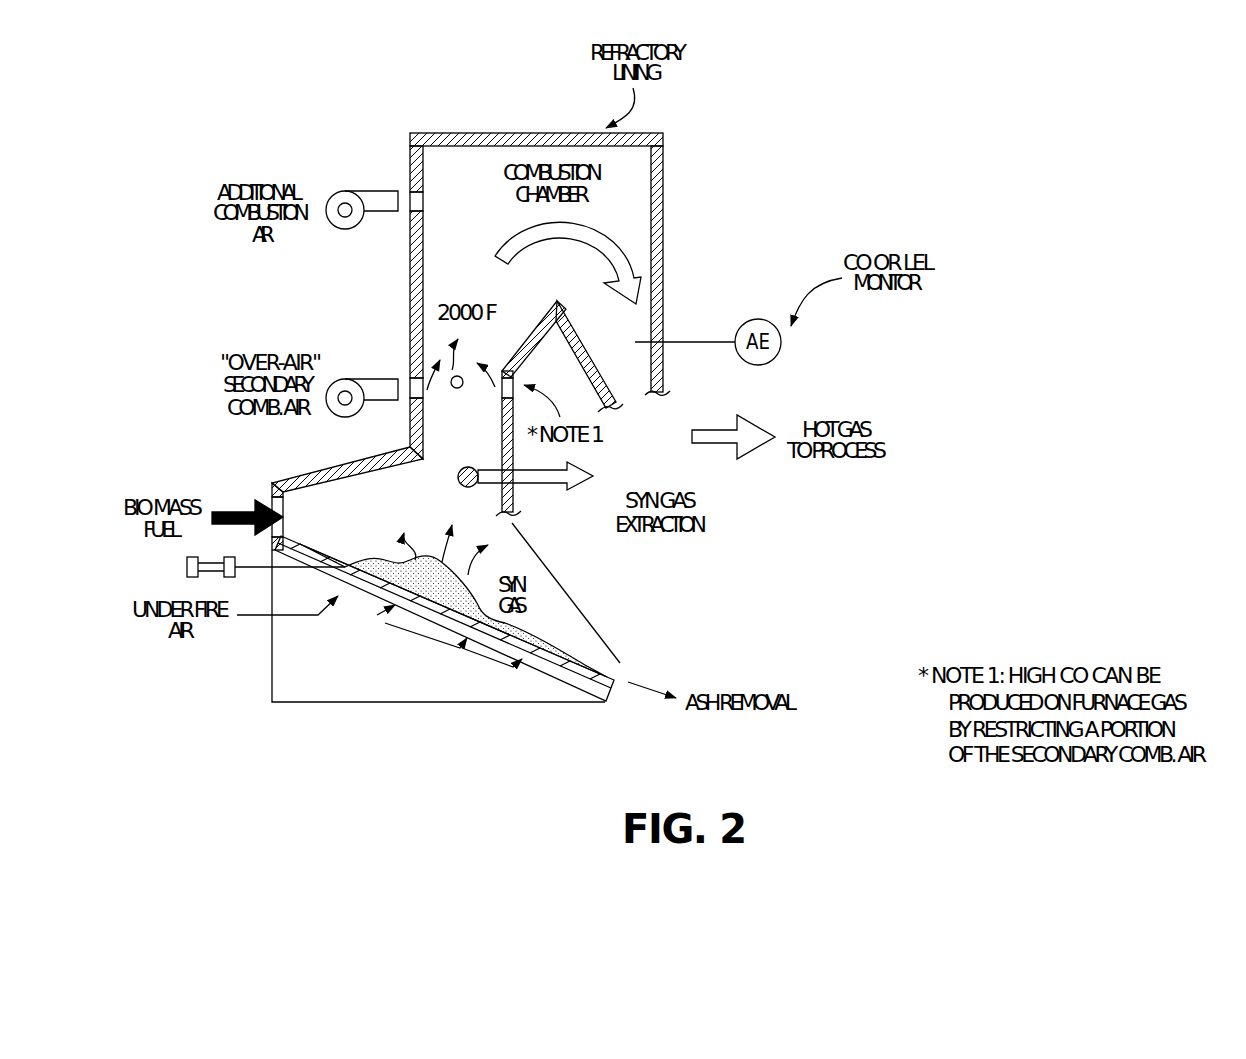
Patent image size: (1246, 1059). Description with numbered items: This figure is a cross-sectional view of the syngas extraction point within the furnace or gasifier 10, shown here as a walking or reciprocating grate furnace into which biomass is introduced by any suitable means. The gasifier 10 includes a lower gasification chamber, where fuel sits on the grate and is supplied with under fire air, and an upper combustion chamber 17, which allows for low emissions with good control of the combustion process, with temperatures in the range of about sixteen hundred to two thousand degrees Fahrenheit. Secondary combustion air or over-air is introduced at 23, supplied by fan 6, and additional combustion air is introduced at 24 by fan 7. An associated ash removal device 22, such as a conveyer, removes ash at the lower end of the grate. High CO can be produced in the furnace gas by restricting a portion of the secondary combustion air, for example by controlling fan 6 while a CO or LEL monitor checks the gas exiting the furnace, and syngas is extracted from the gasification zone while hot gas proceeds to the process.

The fan 6 is at (344, 420).
The fan 7 is at (345, 224).
The furnace or gasifier 10 is at (285, 481).
The combustion chamber 17 is at (628, 218).
The ash removal device 22 is at (568, 677).
The secondary combustion air introduction point 23 is at (423, 389).
The additional combustion air introduction point 24 is at (423, 201).